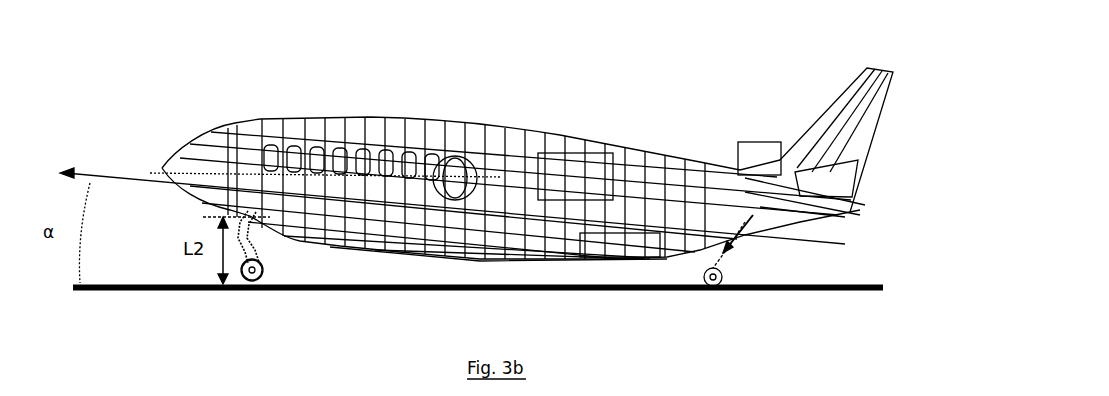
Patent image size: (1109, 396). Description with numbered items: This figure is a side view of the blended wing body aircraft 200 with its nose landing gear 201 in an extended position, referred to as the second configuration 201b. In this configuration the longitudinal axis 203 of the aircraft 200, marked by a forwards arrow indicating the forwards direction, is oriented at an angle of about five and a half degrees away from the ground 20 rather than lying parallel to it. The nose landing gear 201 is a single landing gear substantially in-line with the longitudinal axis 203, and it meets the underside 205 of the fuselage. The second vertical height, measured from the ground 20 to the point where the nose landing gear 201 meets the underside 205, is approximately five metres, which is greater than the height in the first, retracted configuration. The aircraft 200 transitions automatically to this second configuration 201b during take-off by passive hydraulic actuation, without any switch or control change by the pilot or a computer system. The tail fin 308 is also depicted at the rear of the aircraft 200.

The blended wing body aircraft 200 is at (208, 66).
The longitudinal axis 203 is at (124, 177).
The nose landing gear 201 is at (248, 288).
The second configuration 201b is at (267, 293).
The underside of the fuselage 205 is at (435, 250).
The ground 20 is at (620, 290).
The vertical tail fin 308 is at (868, 118).